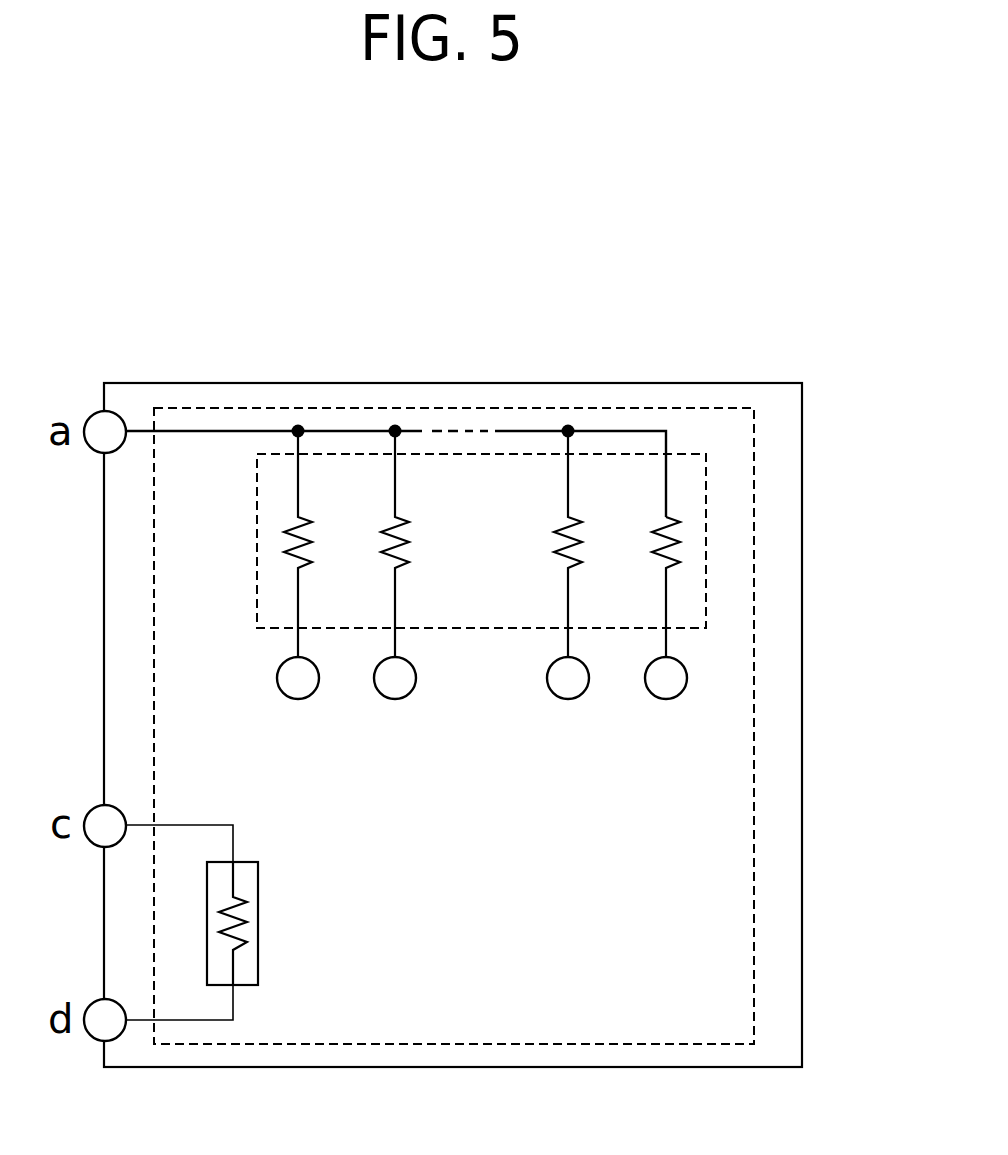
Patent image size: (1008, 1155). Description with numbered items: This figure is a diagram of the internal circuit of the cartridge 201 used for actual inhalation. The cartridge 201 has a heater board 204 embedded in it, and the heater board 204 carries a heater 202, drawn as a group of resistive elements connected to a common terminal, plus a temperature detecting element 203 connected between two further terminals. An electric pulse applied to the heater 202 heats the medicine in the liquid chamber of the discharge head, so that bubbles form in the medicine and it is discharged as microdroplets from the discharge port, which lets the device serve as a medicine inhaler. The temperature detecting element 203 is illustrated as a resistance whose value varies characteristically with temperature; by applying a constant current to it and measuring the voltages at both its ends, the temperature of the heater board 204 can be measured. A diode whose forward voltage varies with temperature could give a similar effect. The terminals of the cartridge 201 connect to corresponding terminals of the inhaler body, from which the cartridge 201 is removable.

The cartridge 201 is at (212, 383).
The heater 202 is at (705, 500).
The temperature detecting element 203 is at (258, 915).
The heater board 204 is at (754, 590).